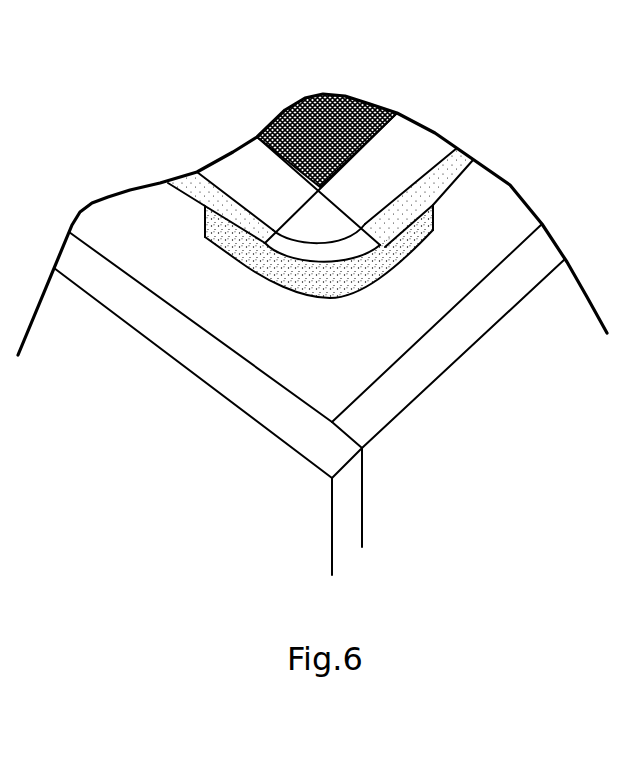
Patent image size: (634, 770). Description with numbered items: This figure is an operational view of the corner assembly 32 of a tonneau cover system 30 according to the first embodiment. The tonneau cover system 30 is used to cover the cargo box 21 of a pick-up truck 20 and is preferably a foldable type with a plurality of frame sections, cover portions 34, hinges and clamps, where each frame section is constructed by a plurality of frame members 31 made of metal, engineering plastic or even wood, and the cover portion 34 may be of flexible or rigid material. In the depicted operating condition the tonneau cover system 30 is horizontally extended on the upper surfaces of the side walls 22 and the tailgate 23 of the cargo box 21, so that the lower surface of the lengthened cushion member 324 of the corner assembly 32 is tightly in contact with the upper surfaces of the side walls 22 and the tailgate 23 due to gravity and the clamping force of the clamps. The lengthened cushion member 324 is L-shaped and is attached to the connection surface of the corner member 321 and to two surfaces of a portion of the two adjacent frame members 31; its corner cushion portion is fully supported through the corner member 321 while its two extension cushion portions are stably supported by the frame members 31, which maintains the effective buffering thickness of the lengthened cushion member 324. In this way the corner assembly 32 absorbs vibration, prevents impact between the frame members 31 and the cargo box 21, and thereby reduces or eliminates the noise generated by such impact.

The pick-up truck 20 is at (309, 399).
The cargo box 21 is at (108, 220).
The side walls 22 is at (388, 394).
The tailgate 23 is at (188, 364).
The tonneau cover system 30 is at (377, 256).
The frame members 31 is at (234, 157).
The corner assembly 32 is at (377, 324).
The corner member 321 is at (340, 233).
The lengthened cushion member 324 is at (300, 287).
The cover portion 34 is at (322, 96).